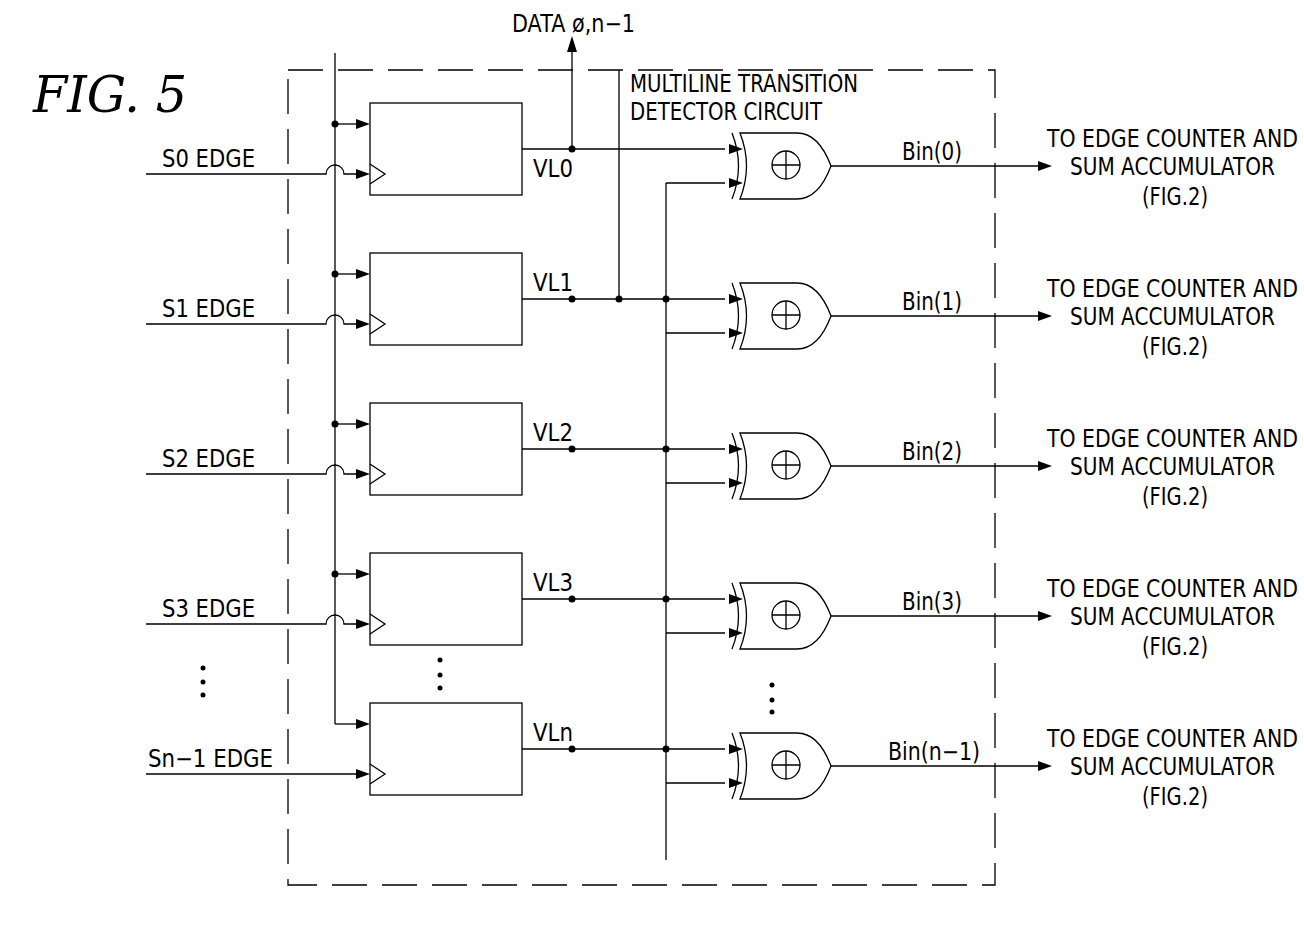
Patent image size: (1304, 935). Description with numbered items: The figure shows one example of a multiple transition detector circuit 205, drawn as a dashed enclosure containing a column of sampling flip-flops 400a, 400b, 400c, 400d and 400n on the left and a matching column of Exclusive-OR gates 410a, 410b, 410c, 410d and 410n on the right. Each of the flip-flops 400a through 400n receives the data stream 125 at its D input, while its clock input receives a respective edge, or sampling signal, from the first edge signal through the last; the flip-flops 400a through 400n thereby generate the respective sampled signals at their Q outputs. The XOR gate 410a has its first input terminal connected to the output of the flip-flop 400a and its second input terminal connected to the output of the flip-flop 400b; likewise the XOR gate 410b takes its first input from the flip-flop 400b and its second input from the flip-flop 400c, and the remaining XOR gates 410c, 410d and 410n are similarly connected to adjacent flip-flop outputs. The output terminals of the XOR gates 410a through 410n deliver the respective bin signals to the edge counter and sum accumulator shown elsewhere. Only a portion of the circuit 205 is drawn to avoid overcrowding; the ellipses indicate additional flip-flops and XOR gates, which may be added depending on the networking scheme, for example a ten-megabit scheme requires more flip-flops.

The data stream 125 is at (335, 375).
The multiple transition detector circuit 205 is at (770, 70).
The sampling flip-flop 400a is at (443, 195).
The sampling flip-flop 400b is at (443, 345).
The sampling flip-flop 400c is at (443, 495).
The sampling flip-flop 400d is at (443, 645).
The sampling flip-flop 400n is at (443, 795).
The Exclusive-OR gate 410a is at (793, 199).
The Exclusive-OR gate 410b is at (793, 349).
The Exclusive-OR gate 410c is at (793, 499).
The Exclusive-OR gate 410d is at (793, 649).
The Exclusive-OR gate 410n is at (793, 799).